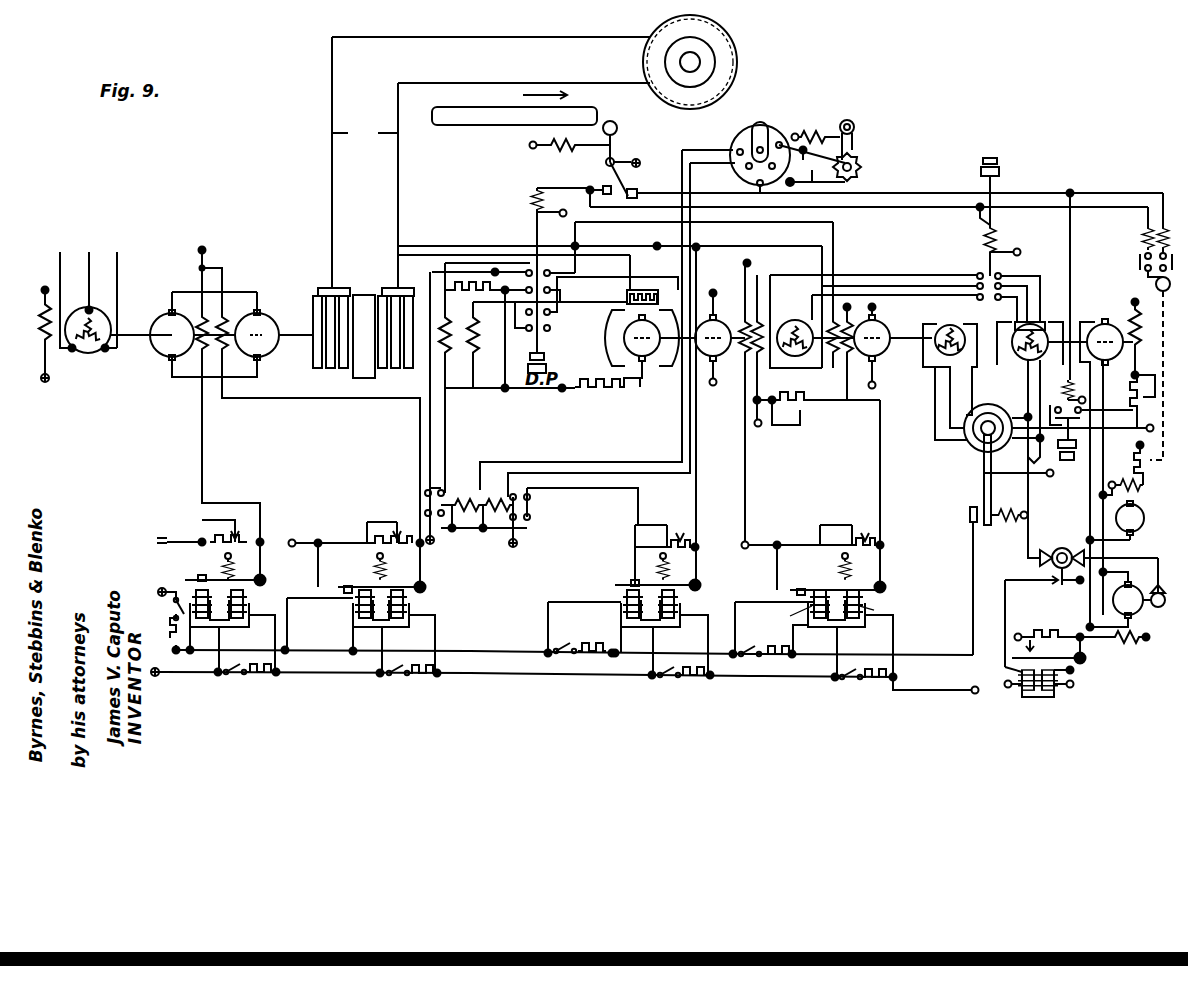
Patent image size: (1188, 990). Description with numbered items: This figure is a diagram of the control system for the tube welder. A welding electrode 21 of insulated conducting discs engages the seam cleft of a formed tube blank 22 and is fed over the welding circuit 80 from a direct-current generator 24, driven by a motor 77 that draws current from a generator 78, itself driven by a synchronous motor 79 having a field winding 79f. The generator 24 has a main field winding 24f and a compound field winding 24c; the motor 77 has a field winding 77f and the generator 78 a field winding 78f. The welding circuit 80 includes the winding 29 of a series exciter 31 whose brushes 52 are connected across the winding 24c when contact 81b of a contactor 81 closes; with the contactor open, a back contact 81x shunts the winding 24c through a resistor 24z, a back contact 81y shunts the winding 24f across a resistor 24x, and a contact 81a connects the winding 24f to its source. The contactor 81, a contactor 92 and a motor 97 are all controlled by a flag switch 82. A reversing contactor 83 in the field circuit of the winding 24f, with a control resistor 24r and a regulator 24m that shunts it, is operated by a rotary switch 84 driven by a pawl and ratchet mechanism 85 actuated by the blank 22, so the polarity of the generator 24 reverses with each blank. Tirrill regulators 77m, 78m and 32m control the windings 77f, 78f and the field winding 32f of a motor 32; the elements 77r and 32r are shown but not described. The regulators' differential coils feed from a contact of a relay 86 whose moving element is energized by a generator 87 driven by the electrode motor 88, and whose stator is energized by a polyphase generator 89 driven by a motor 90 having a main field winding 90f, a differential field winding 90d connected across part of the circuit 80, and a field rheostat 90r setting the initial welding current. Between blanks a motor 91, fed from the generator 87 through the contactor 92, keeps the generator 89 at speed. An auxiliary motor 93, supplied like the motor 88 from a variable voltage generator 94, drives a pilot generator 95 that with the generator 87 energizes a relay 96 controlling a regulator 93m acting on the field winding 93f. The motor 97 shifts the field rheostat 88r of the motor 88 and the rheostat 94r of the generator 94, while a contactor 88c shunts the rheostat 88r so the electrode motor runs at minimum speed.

The welding electrode 21 is at (728, 62).
The formed tube blank 22 is at (483, 116).
The generator 24 is at (333, 368).
The compound field winding 24c is at (473, 362).
The main field winding 24f is at (440, 358).
The resistor 24x is at (505, 350).
The resistor 24z is at (578, 395).
The control resistor 24r is at (640, 545).
The regulator 24m is at (668, 630).
The winding of series exciter 29 is at (645, 287).
The series exciter 31 is at (672, 386).
The motor 32 is at (720, 322).
The field winding 32f is at (741, 370).
The relay 32r is at (835, 555).
The control regulator 32m is at (853, 630).
The brushes 52 is at (636, 362).
The motor 77 is at (268, 323).
The field winding 77f is at (226, 316).
The relay 77r is at (248, 540).
The regulator 77m is at (398, 630).
The generator 78 is at (157, 340).
The field winding 78f is at (172, 380).
The regulator 78m is at (233, 630).
The motor 79 is at (97, 318).
The field winding 79f is at (48, 352).
The welding circuit 80 is at (365, 162).
The contactor 81 is at (532, 200).
The contact 81a is at (549, 273).
The contact 81b is at (551, 292).
The back contact 81x is at (551, 313).
The back contact 81y is at (551, 329).
The flag switch 82 is at (604, 170).
The reversing contactor 83 is at (470, 492).
The rotary switch 84 is at (768, 130).
The pawl and ratchet mechanism 85 is at (856, 152).
The relay 86 is at (975, 447).
The generator 87 is at (1035, 322).
The motor 88 is at (1103, 322).
The contactor 88c is at (1060, 400).
The field rheostat 88r is at (1103, 432).
The polyphase A. C. generator 89 is at (935, 355).
The variable speed motor 90 is at (880, 325).
The differential field winding 90d is at (830, 360).
The main field winding 90f is at (849, 362).
The field rheostat 90r is at (797, 414).
The motor 91 is at (800, 316).
The contactor 92 is at (996, 241).
The motor 93 is at (1150, 582).
The field winding 93f is at (1081, 648).
The regulator 93m is at (1075, 686).
The variable voltage generator 94 is at (1138, 512).
The rheostat 94r is at (1138, 447).
The pilot generator 95 is at (1158, 608).
The relay 96 is at (1062, 546).
The motor 97 is at (1155, 286).